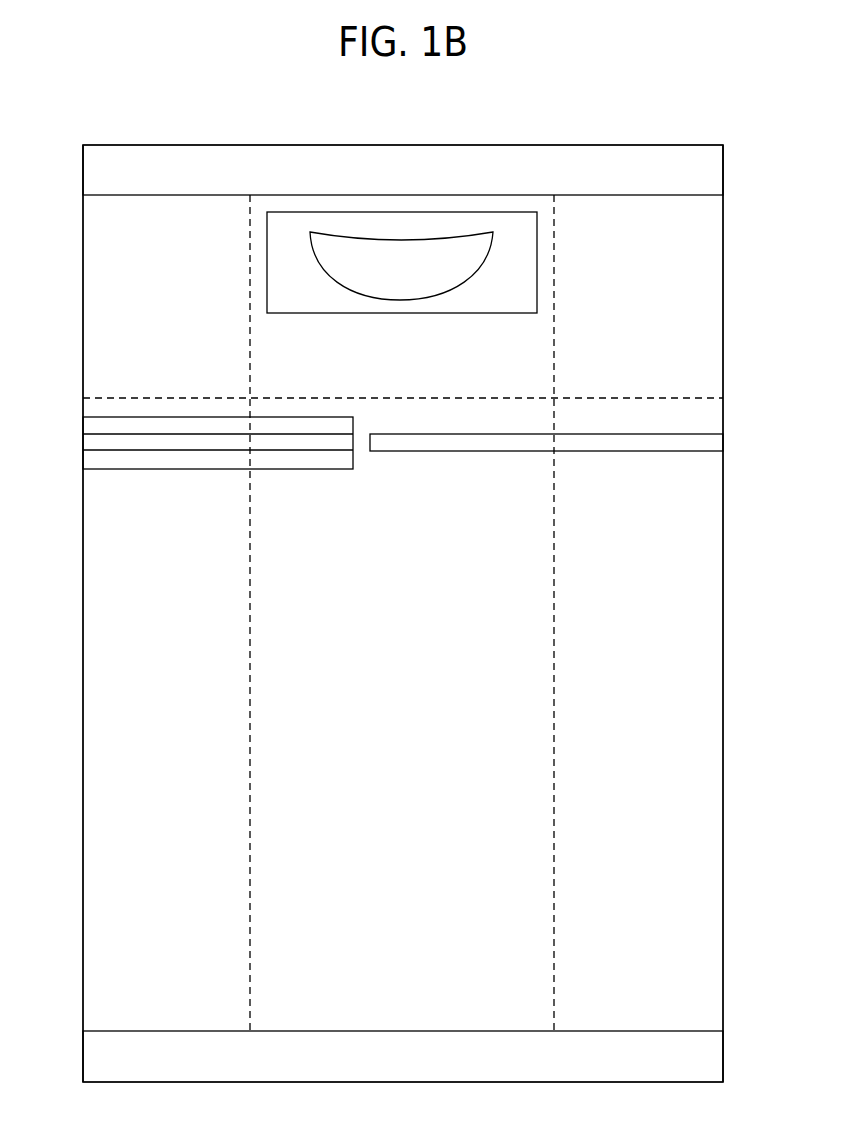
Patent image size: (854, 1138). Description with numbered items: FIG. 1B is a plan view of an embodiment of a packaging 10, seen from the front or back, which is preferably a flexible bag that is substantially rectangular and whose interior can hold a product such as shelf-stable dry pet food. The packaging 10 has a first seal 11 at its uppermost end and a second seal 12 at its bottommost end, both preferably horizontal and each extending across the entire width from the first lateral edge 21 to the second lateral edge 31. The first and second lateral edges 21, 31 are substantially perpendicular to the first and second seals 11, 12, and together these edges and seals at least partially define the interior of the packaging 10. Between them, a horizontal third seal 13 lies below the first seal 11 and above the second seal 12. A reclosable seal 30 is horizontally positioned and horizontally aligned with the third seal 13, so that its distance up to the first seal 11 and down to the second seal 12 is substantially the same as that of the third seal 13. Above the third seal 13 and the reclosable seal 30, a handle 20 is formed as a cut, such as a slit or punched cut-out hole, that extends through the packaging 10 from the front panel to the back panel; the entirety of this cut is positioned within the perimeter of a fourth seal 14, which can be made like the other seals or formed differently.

The packaging 10 is at (640, 98).
The first seal 11 is at (110, 171).
The second seal 12 is at (110, 1058).
The third seal 13 is at (700, 443).
The fourth seal 14 is at (518, 281).
The handle 20 is at (412, 225).
The first lateral edge 21 is at (734, 670).
The reclosable seal 30 is at (144, 480).
The second lateral edge 31 is at (72, 717).